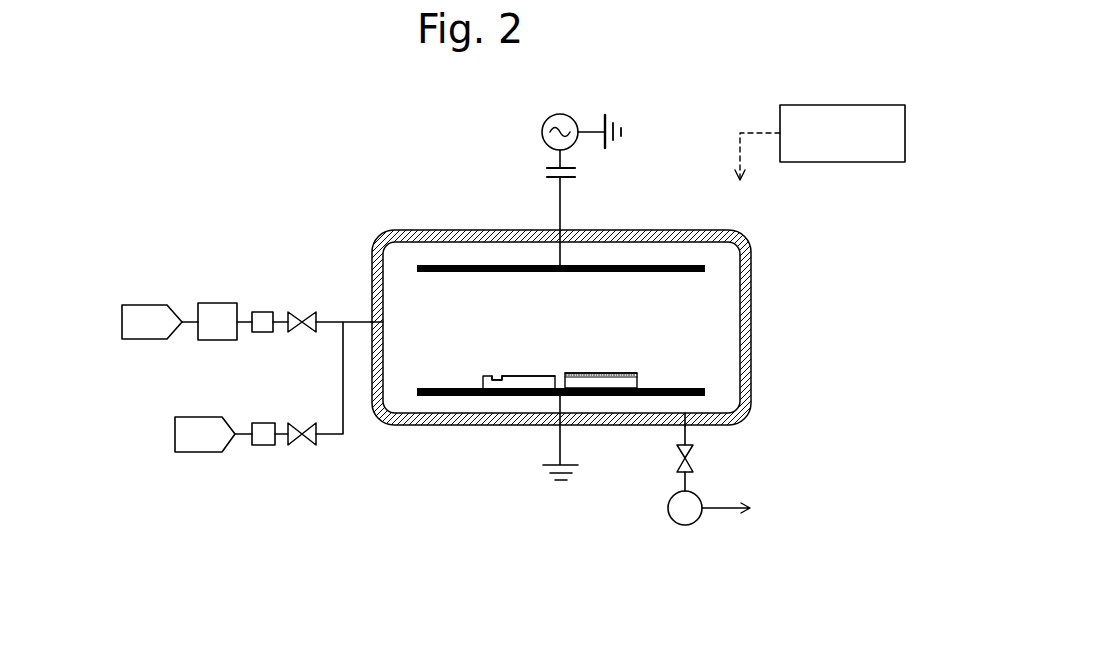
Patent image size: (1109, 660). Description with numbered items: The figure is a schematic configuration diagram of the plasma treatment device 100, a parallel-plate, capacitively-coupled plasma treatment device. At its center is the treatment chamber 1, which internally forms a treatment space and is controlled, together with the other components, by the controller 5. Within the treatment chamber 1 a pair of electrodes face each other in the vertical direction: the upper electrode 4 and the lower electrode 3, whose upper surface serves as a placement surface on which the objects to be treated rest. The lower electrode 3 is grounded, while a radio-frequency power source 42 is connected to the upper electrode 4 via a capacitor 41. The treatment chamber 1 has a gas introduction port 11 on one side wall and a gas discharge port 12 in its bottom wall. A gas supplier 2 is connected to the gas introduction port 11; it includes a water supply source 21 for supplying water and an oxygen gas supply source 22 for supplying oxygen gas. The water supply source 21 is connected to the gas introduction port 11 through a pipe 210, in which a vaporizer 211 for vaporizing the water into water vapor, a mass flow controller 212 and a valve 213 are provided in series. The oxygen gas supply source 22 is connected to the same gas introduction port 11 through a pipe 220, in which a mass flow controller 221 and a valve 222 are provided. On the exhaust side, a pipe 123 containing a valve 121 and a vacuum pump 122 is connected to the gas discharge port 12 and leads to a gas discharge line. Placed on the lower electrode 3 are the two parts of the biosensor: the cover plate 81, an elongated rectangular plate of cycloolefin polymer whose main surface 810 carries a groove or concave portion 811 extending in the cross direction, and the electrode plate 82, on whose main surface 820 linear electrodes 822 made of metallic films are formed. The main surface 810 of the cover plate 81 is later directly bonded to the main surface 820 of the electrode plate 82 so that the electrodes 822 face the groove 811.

The plasma treatment device 100 is at (262, 183).
The treatment chamber 1 is at (420, 228).
The gas supplier 2 is at (108, 282).
The lower electrode 3 is at (450, 388).
The upper electrode 4 is at (458, 273).
The controller 5 is at (907, 123).
The gas introduction port 11 is at (384, 324).
The gas discharge port 12 is at (686, 413).
The water supply source 21 is at (137, 340).
The pipe 210 is at (193, 326).
The vaporizer 211 is at (215, 303).
The mass flow controller 212 is at (262, 312).
The valve 213 is at (310, 312).
The oxygen gas supply source 22 is at (190, 452).
The pipe 220 is at (242, 438).
The mass flow controller 221 is at (263, 445).
The valve 222 is at (310, 445).
The capacitor 41 is at (553, 177).
The radio-frequency power source 42 is at (545, 119).
The cover plate 81 is at (483, 383).
The main surface 810 is at (536, 370).
The groove (concave portion) 811 is at (497, 377).
The electrode plate 82 is at (638, 378).
The main surface 820 is at (630, 368).
The electrode 822 is at (600, 374).
The valve 121 is at (692, 465).
The vacuum pump 122 is at (670, 512).
The pipe 123 is at (680, 432).